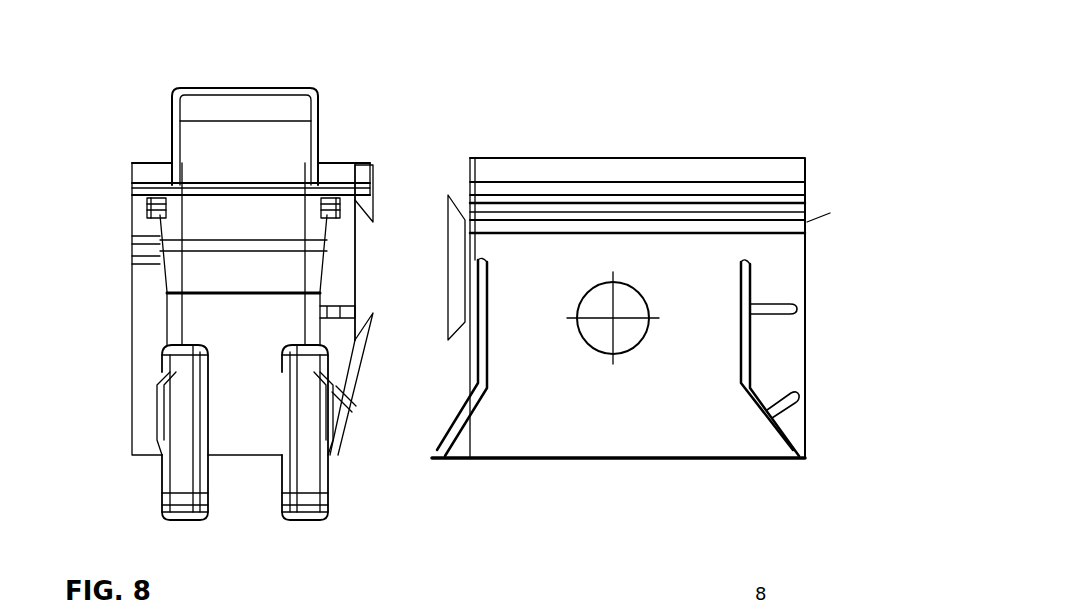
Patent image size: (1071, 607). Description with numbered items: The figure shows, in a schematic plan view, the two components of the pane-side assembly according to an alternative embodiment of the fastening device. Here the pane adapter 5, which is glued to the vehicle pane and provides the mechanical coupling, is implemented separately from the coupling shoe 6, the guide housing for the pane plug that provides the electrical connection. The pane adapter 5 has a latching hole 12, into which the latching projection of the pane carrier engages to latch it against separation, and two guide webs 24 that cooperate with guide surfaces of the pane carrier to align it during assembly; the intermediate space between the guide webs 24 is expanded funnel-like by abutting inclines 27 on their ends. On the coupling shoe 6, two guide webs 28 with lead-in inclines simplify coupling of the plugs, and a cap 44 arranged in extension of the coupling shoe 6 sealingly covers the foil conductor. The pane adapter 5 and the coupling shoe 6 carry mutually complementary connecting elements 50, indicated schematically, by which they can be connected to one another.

The cap 44 is at (203, 142).
The coupling shoe 6 is at (165, 267).
The guide webs 28 is at (162, 475).
The connecting elements 50 is at (445, 252).
The pane adapter 5 is at (727, 152).
The latching hole 12 is at (625, 298).
The guide webs 24 is at (487, 330).
The abutting inclines 27 is at (467, 420).